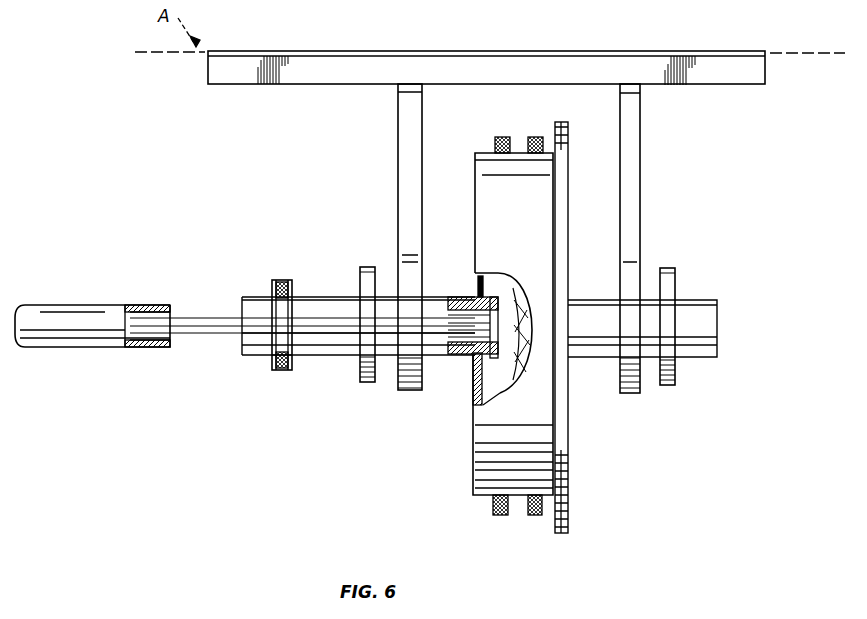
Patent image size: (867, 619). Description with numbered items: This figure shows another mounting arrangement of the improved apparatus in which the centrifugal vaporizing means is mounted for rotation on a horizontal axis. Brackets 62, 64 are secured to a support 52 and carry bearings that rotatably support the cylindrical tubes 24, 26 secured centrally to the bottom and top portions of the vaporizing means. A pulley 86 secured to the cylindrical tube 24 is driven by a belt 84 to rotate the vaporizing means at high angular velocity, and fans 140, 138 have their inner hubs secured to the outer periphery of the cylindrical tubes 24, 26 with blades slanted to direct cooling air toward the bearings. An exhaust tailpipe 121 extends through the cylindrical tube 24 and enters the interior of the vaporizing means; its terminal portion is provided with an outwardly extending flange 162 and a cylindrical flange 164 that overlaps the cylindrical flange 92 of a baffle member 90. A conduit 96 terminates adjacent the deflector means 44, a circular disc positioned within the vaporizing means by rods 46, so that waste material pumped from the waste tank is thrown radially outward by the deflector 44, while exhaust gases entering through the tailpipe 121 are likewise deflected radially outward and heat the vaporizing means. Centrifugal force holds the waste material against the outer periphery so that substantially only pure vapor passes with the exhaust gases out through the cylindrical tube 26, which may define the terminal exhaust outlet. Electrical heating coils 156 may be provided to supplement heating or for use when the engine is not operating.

The support 52 is at (746, 75).
The bracket 62 is at (412, 391).
The bracket 64 is at (624, 394).
The rods 46 is at (520, 314).
The electrical heating elements 156 is at (535, 136).
The cylindrical tube 24 is at (348, 305).
The cylindrical tube 26 is at (688, 302).
The conduit 96 is at (192, 338).
The exhaust tailpipe 121 is at (103, 337).
The pulley 86 is at (286, 284).
The belt 84 is at (281, 371).
The fan 140 is at (358, 375).
The fan 138 is at (675, 385).
The baffle member 90 is at (475, 283).
The cylindrical flange 92 is at (474, 298).
The cylindrical flange 164 is at (487, 297).
The outwardly extending flange 162 is at (496, 300).
The deflector means 44 is at (503, 384).